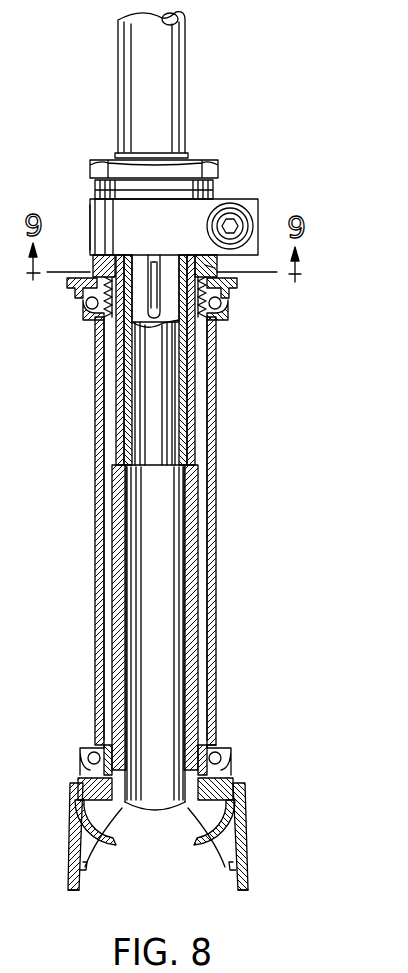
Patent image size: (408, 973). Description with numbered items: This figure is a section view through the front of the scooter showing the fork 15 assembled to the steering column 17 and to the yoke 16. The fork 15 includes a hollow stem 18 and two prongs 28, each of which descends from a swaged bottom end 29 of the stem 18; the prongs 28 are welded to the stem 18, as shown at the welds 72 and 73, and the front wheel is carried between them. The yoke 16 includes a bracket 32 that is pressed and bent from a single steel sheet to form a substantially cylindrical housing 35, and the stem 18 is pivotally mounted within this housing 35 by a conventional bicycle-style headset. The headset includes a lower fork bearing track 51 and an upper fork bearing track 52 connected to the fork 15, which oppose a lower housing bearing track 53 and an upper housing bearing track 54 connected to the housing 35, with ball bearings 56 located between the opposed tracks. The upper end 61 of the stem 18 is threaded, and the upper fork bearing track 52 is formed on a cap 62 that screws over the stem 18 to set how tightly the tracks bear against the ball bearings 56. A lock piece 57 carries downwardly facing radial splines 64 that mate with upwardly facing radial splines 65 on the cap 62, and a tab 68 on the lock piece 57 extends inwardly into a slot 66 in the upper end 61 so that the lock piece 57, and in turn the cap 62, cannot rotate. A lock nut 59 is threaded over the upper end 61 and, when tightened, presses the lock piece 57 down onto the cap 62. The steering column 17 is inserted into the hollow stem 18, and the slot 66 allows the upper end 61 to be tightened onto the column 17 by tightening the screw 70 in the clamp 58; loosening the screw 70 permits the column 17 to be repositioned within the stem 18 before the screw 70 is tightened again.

The fork 15 is at (191, 598).
The yoke 16 is at (96, 576).
The steering column 17 is at (118, 96).
The stem 18 is at (208, 648).
The prongs 28 is at (70, 878).
The swaged bottom end 29 is at (220, 731).
The bracket 32 is at (100, 437).
The cylindrical housing 35 is at (112, 497).
The lower fork bearing track 51 is at (83, 778).
The upper fork bearing track 52 is at (94, 266).
The lower housing bearing track 53 is at (94, 743).
The upper housing bearing track 54 is at (85, 316).
The ball bearings 56 is at (87, 307).
The lock piece 57 is at (218, 258).
The clamp 58 is at (92, 204).
The lock nut 59 is at (218, 170).
The upper end 61 is at (110, 278).
The cap 62 is at (68, 288).
The radial splines 64 is at (223, 273).
The radial splines 65 is at (90, 217).
The slot 66 is at (152, 330).
The tab 68 is at (157, 260).
The screw 70 is at (237, 221).
The weld 72 is at (80, 794).
The weld 73 is at (72, 840).